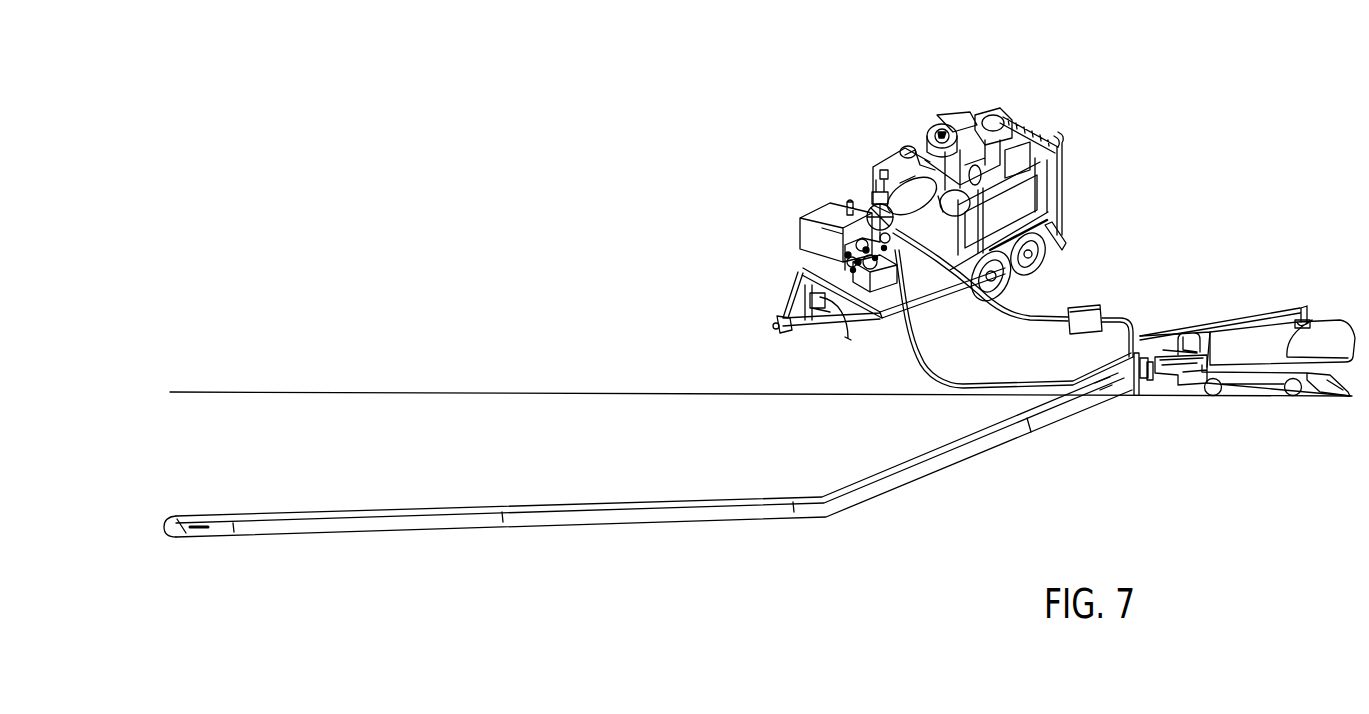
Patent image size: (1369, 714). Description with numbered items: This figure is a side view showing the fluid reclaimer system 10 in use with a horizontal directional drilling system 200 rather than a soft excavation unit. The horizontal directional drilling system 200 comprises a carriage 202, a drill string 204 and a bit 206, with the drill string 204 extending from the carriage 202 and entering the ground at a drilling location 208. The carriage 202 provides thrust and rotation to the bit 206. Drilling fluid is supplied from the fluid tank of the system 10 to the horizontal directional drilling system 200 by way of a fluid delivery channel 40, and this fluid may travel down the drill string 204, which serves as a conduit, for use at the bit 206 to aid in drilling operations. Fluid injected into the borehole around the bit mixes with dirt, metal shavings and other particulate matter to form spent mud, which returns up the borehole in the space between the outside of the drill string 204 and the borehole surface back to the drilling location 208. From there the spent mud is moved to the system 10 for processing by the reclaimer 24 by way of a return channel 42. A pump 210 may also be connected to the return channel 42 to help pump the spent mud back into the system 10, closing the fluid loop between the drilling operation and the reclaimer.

The system 10 is at (866, 125).
The reclaimer 24 is at (960, 125).
The fluid delivery channel 40 is at (913, 348).
The return channel 42 is at (1028, 315).
The horizontal directional drilling system 200 is at (1263, 281).
The carriage 202 is at (1178, 382).
The drill string 204 is at (657, 517).
The bit 206 is at (181, 528).
The drilling location 208 is at (1120, 397).
The pump 210 is at (1095, 307).